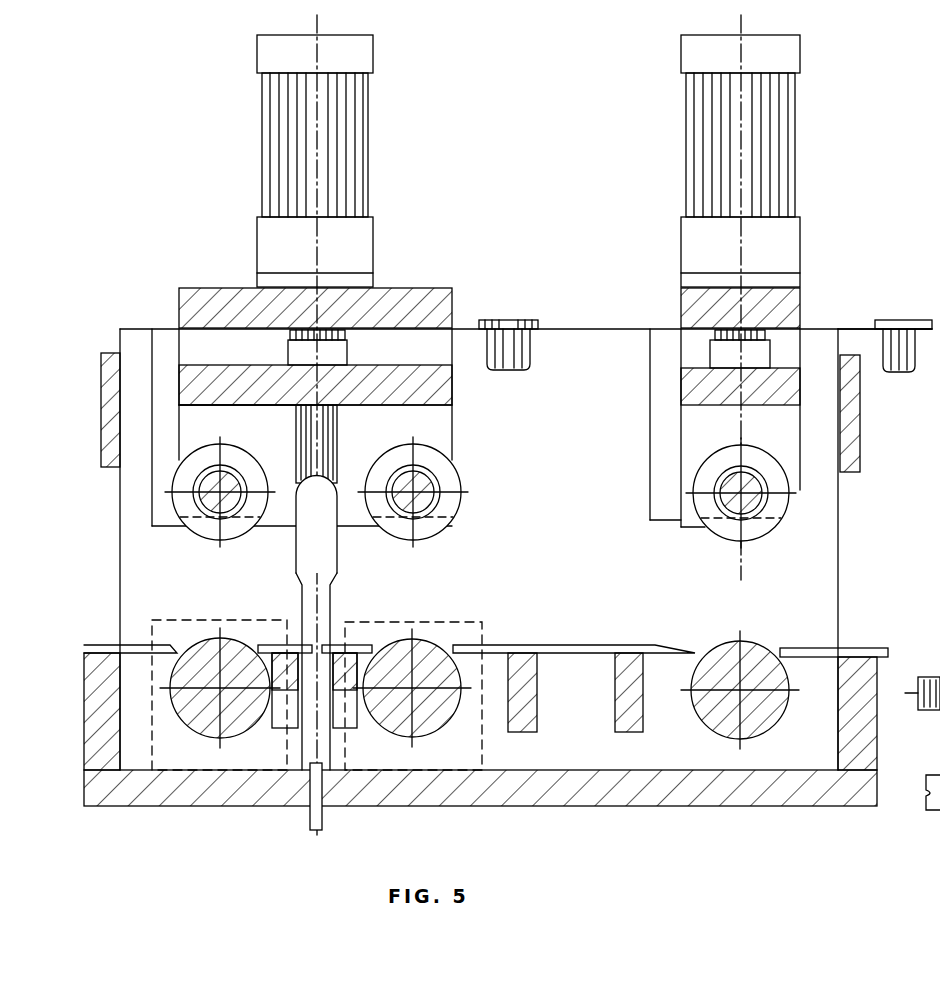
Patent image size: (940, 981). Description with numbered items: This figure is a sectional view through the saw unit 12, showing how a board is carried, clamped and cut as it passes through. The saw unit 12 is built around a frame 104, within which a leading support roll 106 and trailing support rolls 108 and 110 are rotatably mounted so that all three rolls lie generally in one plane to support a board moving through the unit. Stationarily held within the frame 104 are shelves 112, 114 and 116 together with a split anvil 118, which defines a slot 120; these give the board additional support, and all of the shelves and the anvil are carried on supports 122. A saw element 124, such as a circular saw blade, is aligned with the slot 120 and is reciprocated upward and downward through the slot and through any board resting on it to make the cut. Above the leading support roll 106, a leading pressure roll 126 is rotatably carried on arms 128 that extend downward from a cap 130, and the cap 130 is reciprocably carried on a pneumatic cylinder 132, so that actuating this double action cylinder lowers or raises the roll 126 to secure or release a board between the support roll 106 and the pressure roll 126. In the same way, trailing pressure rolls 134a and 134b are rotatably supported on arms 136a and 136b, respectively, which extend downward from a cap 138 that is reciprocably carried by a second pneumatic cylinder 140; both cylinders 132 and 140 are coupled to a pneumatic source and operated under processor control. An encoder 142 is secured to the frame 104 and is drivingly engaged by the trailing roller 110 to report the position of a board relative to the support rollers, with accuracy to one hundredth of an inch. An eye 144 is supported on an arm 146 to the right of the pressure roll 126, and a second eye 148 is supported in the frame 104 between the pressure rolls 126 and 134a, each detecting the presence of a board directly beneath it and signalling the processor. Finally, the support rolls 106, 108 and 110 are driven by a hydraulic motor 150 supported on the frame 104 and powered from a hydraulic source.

The saw unit 12 is at (551, 208).
The frame 104 is at (840, 614).
The leading support roll 106 is at (748, 732).
The trailing support roll 108 is at (418, 730).
The trailing support roll 110 is at (210, 640).
The shelf 112 is at (795, 648).
The shelf 114 is at (610, 645).
The shelf 116 is at (108, 645).
The split anvil 118 is at (283, 645).
The slot 120 is at (327, 648).
The supports 122 is at (118, 738).
The saw element 124 is at (310, 821).
The leading pressure roll 126 is at (715, 528).
The arms 128 is at (695, 425).
The cap 130 is at (690, 388).
The pneumatic cylinder 132 is at (804, 156).
The trailing pressure roll 134a is at (432, 525).
The trailing pressure roll 134b is at (213, 522).
The arm 136a is at (437, 428).
The arm 136b is at (278, 431).
The cap 138 is at (440, 385).
The pneumatic cylinder 140 is at (376, 163).
The encoder 142 is at (407, 770).
The eye 144 is at (897, 375).
The arm 146 is at (851, 330).
The eye 148 is at (511, 340).
The hydraulic motor 150 is at (180, 770).